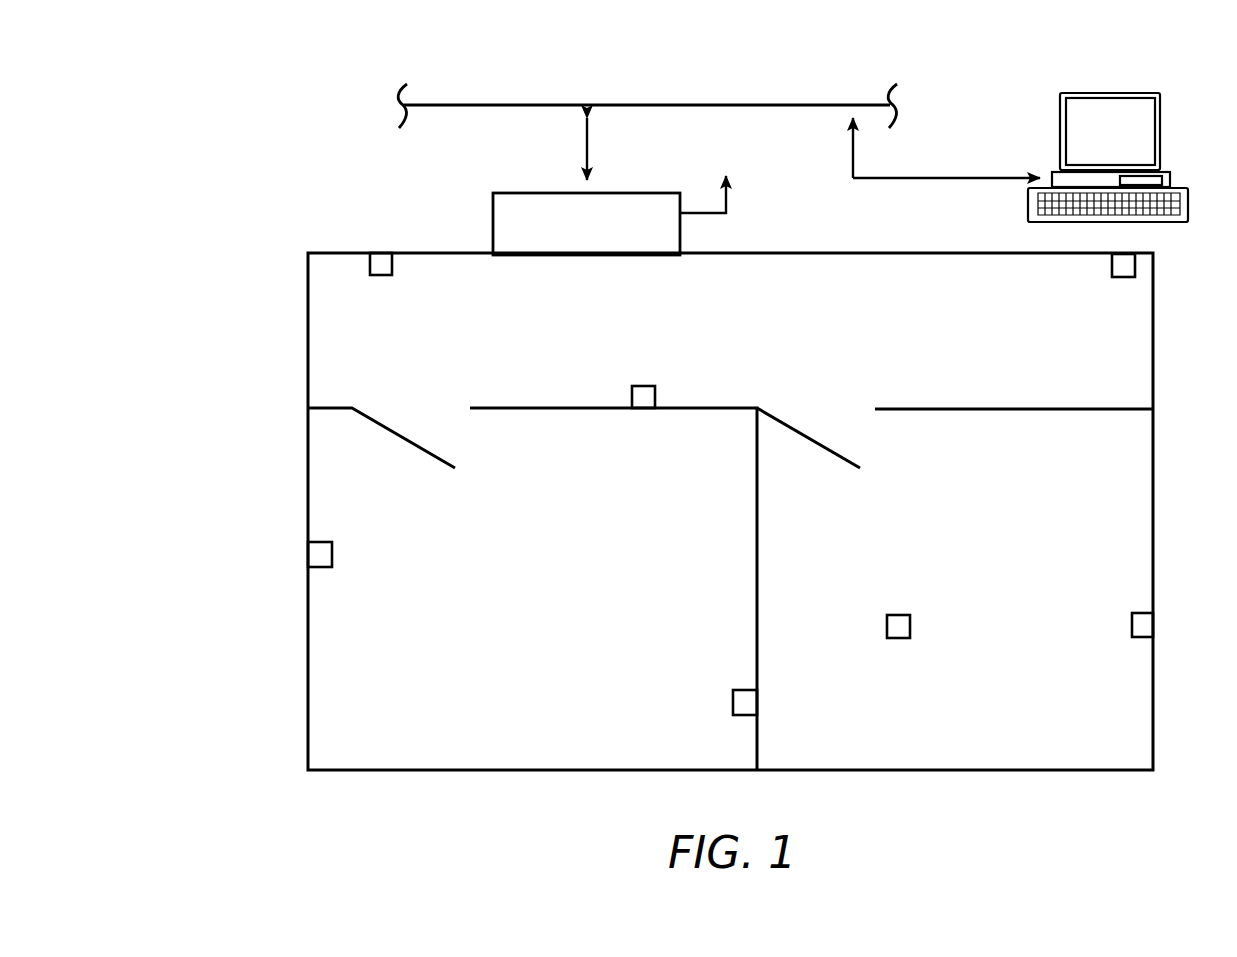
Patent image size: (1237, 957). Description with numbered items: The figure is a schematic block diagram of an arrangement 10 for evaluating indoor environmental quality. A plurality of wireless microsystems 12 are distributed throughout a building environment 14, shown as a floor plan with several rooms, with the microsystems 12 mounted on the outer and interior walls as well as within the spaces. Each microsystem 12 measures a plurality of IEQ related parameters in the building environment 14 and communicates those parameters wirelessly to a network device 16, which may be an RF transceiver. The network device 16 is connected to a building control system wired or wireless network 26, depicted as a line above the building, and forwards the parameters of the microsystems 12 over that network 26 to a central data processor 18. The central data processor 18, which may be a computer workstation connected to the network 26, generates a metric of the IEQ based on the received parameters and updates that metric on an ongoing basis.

The arrangement 10 is at (246, 128).
The wireless microsystem 12 is at (392, 253).
The building environment 14 is at (306, 358).
The network device 16 is at (609, 186).
The central data processor 18 is at (1058, 172).
The building control system network 26 is at (765, 108).